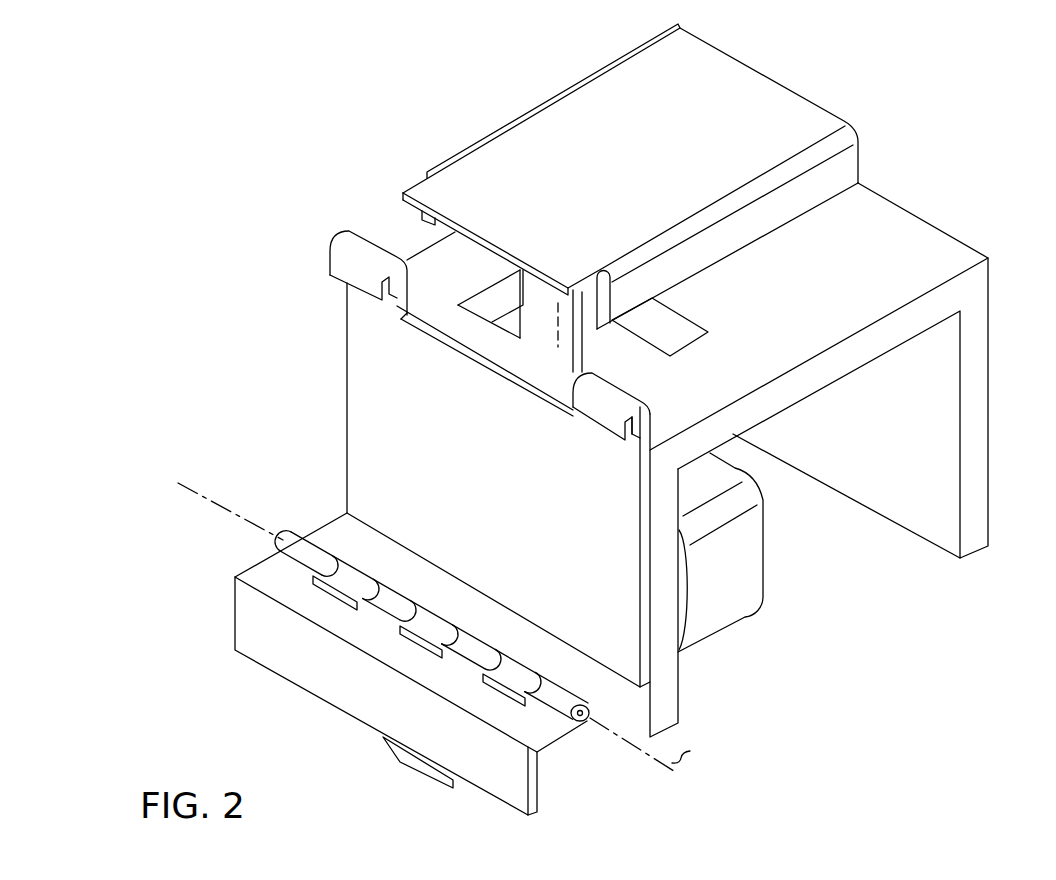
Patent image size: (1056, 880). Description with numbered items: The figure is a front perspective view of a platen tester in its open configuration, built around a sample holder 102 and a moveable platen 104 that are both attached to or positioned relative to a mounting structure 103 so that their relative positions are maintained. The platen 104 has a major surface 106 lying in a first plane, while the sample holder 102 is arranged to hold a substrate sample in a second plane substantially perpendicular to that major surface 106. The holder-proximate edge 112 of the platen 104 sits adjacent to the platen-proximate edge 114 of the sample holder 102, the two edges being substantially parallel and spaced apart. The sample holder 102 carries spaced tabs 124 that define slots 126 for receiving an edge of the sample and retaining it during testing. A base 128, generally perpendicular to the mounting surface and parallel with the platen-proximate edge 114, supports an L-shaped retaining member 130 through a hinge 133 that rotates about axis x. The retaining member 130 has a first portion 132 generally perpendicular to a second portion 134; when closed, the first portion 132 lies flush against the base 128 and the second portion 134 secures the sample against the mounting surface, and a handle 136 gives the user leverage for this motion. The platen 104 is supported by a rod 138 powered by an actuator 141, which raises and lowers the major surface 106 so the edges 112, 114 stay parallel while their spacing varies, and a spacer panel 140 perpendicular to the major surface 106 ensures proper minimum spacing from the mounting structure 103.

The sample holder 102 is at (353, 399).
The mounting structure 103 is at (978, 284).
The moveable platen 104 is at (594, 98).
The major surface 106 is at (504, 152).
The holder-proximate edge 112 is at (503, 250).
The platen-proximate edge 114 is at (450, 335).
The tabs 124 is at (604, 418).
The slots 126 is at (640, 423).
The base 128 is at (443, 627).
The retaining member 130 is at (378, 674).
The first portion 132 is at (530, 718).
The hinge 133 is at (400, 600).
The second portion 134 is at (518, 790).
The handle 136 is at (412, 766).
The rod 138 is at (553, 322).
The spacer panel 140 is at (848, 165).
The actuator 141 is at (753, 566).